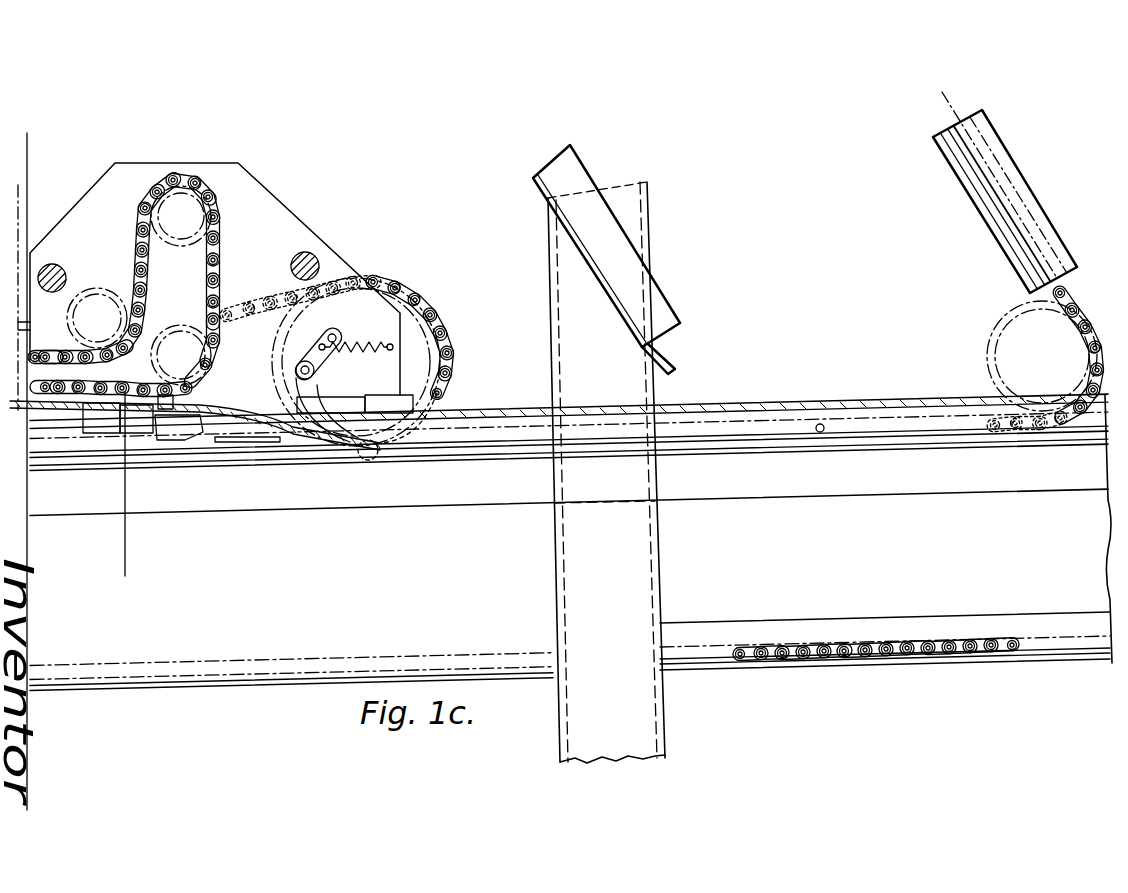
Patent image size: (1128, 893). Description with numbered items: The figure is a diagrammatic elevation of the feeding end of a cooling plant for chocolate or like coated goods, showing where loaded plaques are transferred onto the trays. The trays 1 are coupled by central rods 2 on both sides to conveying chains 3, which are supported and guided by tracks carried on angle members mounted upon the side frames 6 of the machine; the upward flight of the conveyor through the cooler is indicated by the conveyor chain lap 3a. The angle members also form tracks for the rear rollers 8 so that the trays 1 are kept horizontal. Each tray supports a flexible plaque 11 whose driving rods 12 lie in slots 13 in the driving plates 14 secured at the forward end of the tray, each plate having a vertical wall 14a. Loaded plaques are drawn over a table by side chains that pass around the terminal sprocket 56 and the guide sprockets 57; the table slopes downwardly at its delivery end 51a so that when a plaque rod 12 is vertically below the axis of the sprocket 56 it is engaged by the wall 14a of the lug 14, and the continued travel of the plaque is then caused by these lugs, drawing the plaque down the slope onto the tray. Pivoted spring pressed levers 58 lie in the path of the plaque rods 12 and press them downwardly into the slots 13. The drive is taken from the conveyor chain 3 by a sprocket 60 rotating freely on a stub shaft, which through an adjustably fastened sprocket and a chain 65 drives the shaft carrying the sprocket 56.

The tray 1 is at (725, 432).
The central rod 2 is at (833, 417).
The conveying chain 3 is at (1088, 342).
The conveyor chain lap 3a is at (972, 143).
The side frame 6 is at (45, 140).
The rear roller 8 is at (375, 456).
The flexible plaque 11 is at (753, 417).
The driving rod 12 is at (210, 386).
The slot 13 is at (163, 430).
The driving plate 14 is at (108, 418).
The vertical wall 14a is at (157, 415).
The delivery end 51a is at (240, 420).
The terminal sprocket 56 is at (182, 322).
The guide sprocket 57 is at (168, 222).
The spring pressed lever 58 is at (318, 397).
The sprocket 60 is at (415, 350).
The chain 65 is at (347, 267).